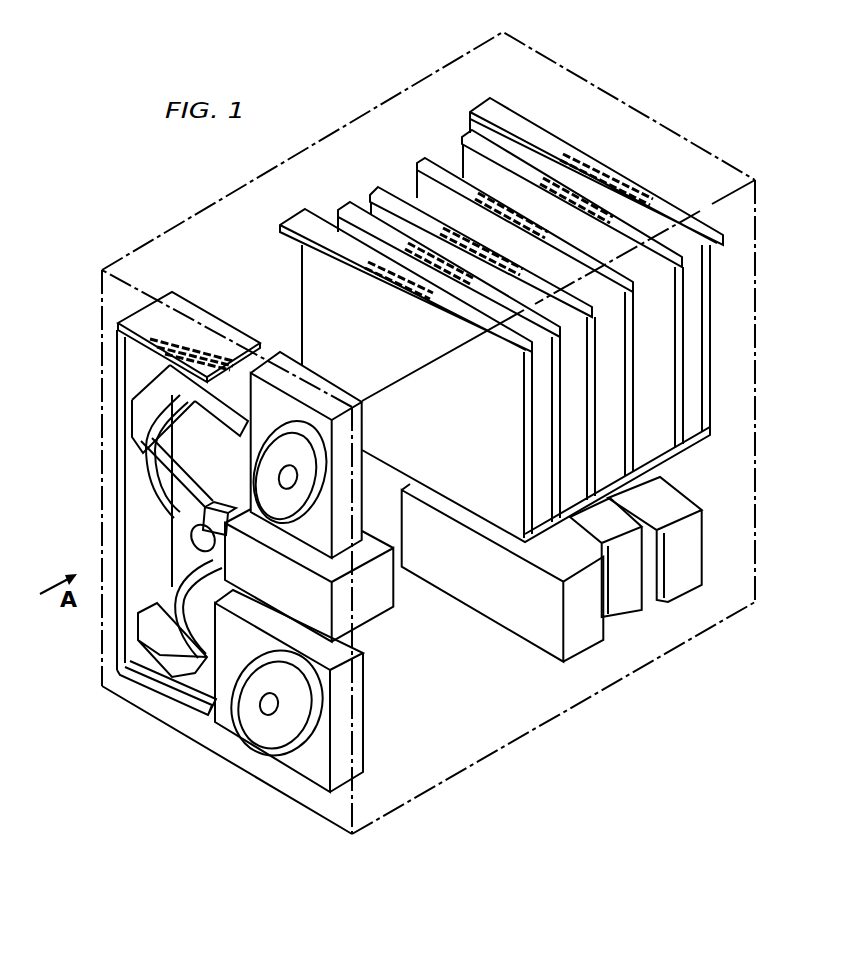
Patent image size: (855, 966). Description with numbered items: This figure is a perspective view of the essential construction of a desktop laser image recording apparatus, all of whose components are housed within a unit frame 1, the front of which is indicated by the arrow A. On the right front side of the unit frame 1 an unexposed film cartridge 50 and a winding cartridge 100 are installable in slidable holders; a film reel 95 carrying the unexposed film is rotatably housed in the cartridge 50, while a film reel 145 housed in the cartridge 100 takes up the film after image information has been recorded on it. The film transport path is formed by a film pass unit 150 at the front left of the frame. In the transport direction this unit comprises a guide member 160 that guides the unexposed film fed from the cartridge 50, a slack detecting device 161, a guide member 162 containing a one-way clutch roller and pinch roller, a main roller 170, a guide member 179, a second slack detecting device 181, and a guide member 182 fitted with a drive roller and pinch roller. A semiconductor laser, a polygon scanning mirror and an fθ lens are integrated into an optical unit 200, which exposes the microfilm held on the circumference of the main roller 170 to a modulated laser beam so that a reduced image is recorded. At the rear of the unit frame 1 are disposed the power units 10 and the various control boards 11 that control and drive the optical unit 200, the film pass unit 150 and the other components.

The unit frame 1 is at (411, 90).
The power units 10 is at (588, 650).
The control boards 11 is at (351, 204).
The unexposed film cartridge 50 is at (319, 709).
The film reel 95 is at (266, 728).
The winding cartridge 100 is at (341, 447).
The film reel 145 is at (307, 430).
The film pass unit 150 is at (128, 313).
The guide member 160 is at (190, 708).
The slack detecting device 161 is at (160, 668).
The guide member 162 is at (178, 570).
The main roller 170 is at (195, 531).
The guide member 179 is at (142, 478).
The slack detecting device 181 is at (132, 405).
The guide member 182 is at (238, 368).
The optical unit 200 is at (394, 618).